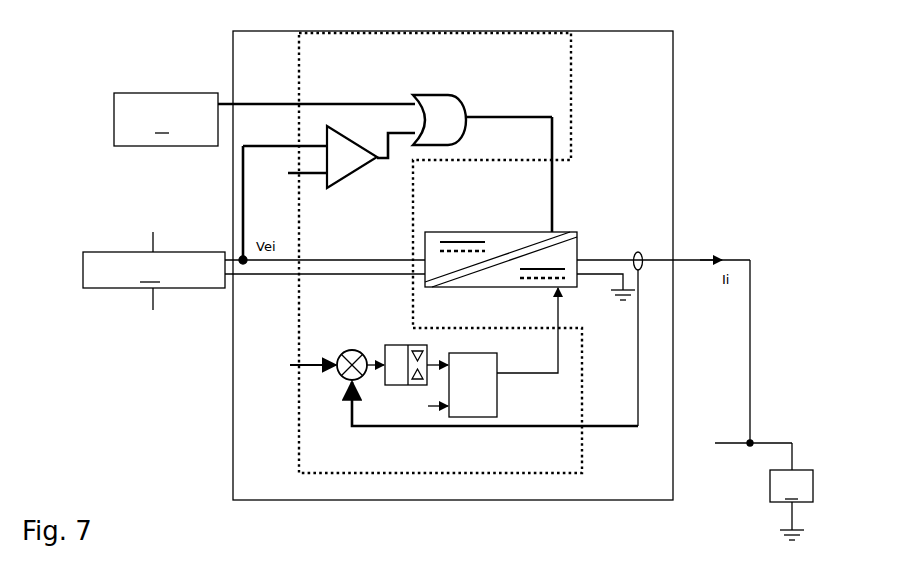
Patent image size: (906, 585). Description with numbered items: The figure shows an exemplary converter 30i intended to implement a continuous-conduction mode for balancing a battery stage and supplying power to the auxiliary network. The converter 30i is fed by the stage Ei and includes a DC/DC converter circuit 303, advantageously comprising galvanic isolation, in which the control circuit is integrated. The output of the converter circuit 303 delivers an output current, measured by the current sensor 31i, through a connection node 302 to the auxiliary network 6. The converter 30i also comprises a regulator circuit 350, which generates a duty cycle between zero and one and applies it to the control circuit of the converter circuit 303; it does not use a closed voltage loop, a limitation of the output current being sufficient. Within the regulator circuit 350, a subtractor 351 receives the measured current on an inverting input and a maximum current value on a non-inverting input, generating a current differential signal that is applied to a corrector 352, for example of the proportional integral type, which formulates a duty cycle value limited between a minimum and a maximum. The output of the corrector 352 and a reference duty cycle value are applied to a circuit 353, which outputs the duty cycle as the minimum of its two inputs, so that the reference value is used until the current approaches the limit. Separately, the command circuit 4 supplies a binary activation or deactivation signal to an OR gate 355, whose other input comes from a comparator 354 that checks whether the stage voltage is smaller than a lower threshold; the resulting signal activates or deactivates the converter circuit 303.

The command circuit 4 is at (264, 119).
The auxiliary network 6 is at (791, 491).
The stage Ei is at (154, 271).
The converter 30i is at (662, 70).
The current sensor 31i is at (638, 252).
The connection node 302 is at (750, 443).
The DC/DC converter circuit 303 is at (500, 232).
The regulator circuit 350 is at (299, 473).
The subtractor 351 is at (350, 350).
The corrector 352 is at (404, 345).
The circuit 353 is at (470, 353).
The comparator 354 is at (352, 138).
The OR gate 355 is at (444, 95).